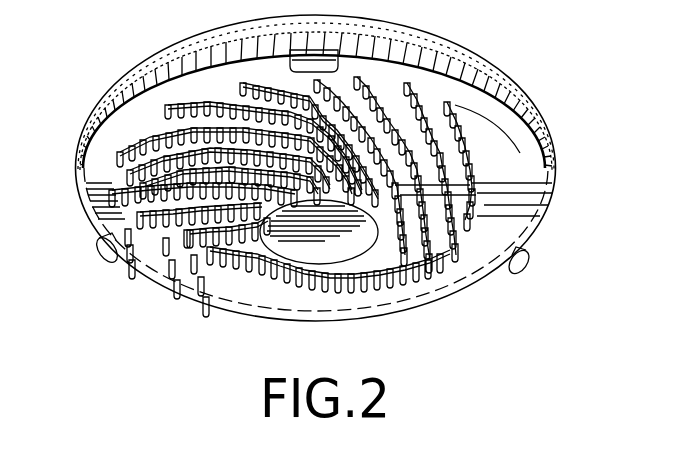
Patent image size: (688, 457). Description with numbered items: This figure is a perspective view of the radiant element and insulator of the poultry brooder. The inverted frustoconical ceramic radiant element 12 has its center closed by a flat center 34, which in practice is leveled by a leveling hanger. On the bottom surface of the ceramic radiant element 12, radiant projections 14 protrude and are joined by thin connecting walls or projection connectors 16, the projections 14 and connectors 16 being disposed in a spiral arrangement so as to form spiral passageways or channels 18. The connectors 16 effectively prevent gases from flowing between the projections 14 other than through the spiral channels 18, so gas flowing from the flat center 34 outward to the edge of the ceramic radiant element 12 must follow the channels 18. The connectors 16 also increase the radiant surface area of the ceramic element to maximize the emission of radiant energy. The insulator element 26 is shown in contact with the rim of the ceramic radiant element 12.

The ceramic radiant element 12 is at (505, 138).
The radiant projections 14 is at (102, 209).
The connecting walls 16 is at (240, 100).
The spiral channels 18 is at (160, 233).
The insulator element 26 is at (481, 57).
The flat center 34 is at (354, 247).